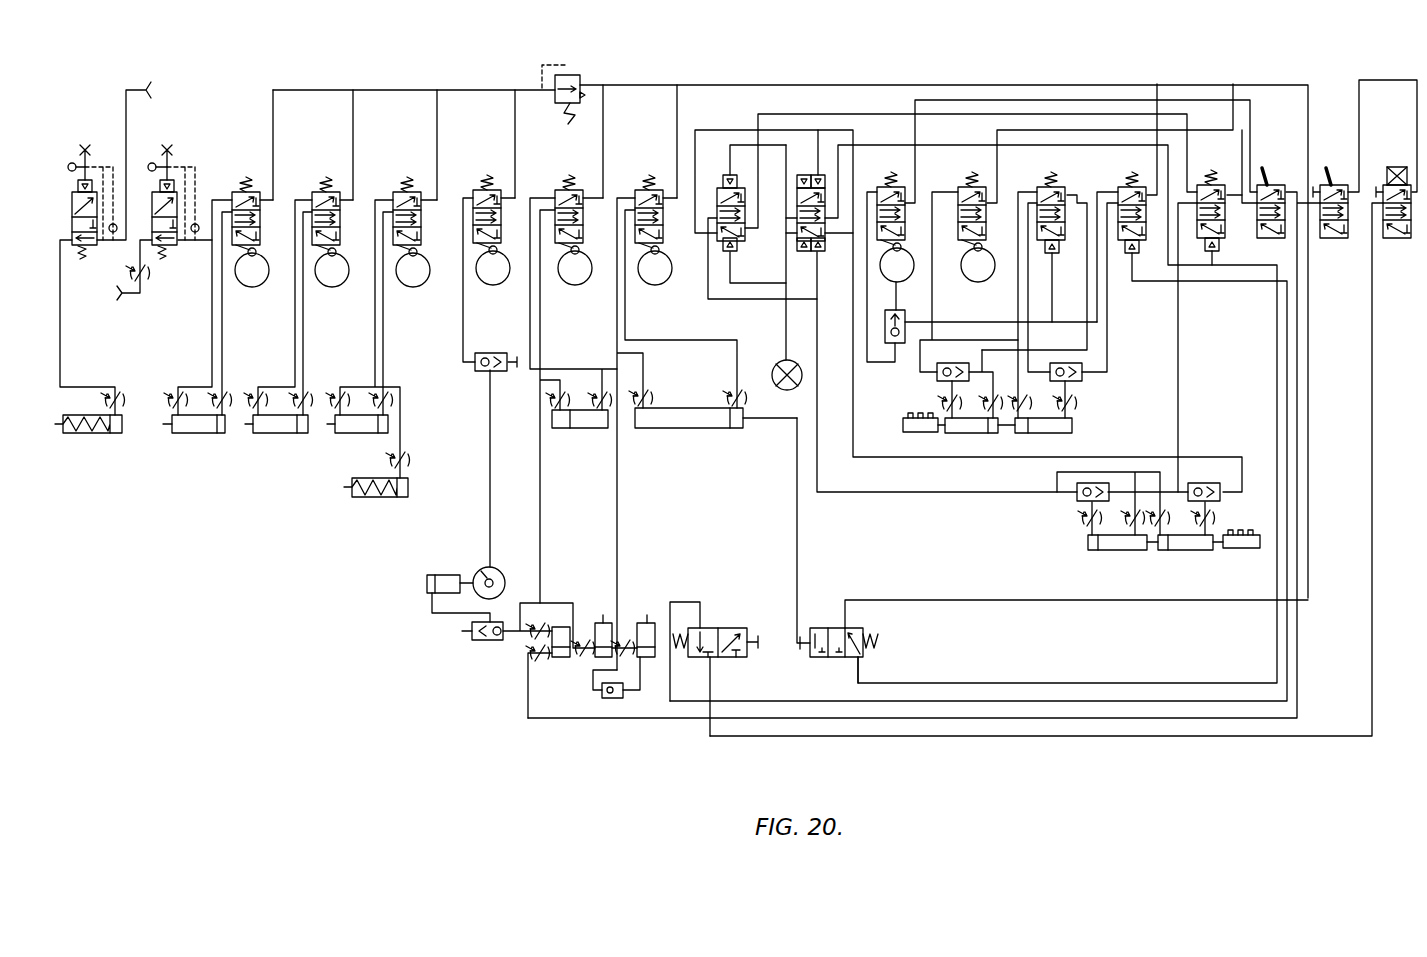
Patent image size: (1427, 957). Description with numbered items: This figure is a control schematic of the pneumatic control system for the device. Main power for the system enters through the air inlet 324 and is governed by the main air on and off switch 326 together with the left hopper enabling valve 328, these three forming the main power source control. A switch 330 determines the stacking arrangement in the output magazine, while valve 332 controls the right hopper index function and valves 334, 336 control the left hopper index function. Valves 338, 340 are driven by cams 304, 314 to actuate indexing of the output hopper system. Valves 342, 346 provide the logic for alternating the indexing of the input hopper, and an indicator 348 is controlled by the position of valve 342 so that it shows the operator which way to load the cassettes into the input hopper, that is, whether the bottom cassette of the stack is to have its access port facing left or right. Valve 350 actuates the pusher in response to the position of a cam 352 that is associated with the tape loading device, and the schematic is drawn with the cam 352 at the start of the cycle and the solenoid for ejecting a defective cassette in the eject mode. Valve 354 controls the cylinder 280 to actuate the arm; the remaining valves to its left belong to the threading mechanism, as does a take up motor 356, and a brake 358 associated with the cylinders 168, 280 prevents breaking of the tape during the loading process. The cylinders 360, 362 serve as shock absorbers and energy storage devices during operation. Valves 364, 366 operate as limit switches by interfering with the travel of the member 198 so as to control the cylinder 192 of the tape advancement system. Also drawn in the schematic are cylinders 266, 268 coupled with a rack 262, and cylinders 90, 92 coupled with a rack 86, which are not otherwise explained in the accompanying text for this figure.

The air inlet 324 is at (1423, 76).
The main air on and off switch 326 is at (1336, 238).
The left hopper enabling valve 328 is at (1397, 238).
The switch 330 is at (1286, 178).
The valve 332 is at (1205, 185).
The valve 334 is at (1122, 188).
The valve 336 is at (1040, 188).
The valve 338 is at (959, 188).
The valve 340 is at (878, 188).
The valve 342 is at (801, 175).
The valve 346 is at (718, 185).
The indicator 348 is at (776, 362).
The valve 350 is at (637, 183).
The cam 352 is at (660, 287).
The valve 354 is at (558, 183).
The take up motor 356 is at (493, 568).
The brake 358 is at (448, 573).
The cylinder 360 is at (598, 612).
The cylinder 362 is at (642, 612).
The valve 364 is at (712, 628).
The valve 366 is at (870, 622).
The cam 314 is at (909, 279).
The cam 304 is at (985, 279).
The rack 262 is at (915, 418).
The cylinder 266 is at (1058, 434).
The cylinder 268 is at (950, 434).
The cylinder 168 is at (581, 430).
The cylinder 192 is at (692, 430).
The member 198 is at (803, 541).
The cylinder 280 is at (560, 660).
The cylinder 90 is at (1120, 552).
The cylinder 92 is at (1184, 552).
The rack 86 is at (1246, 550).